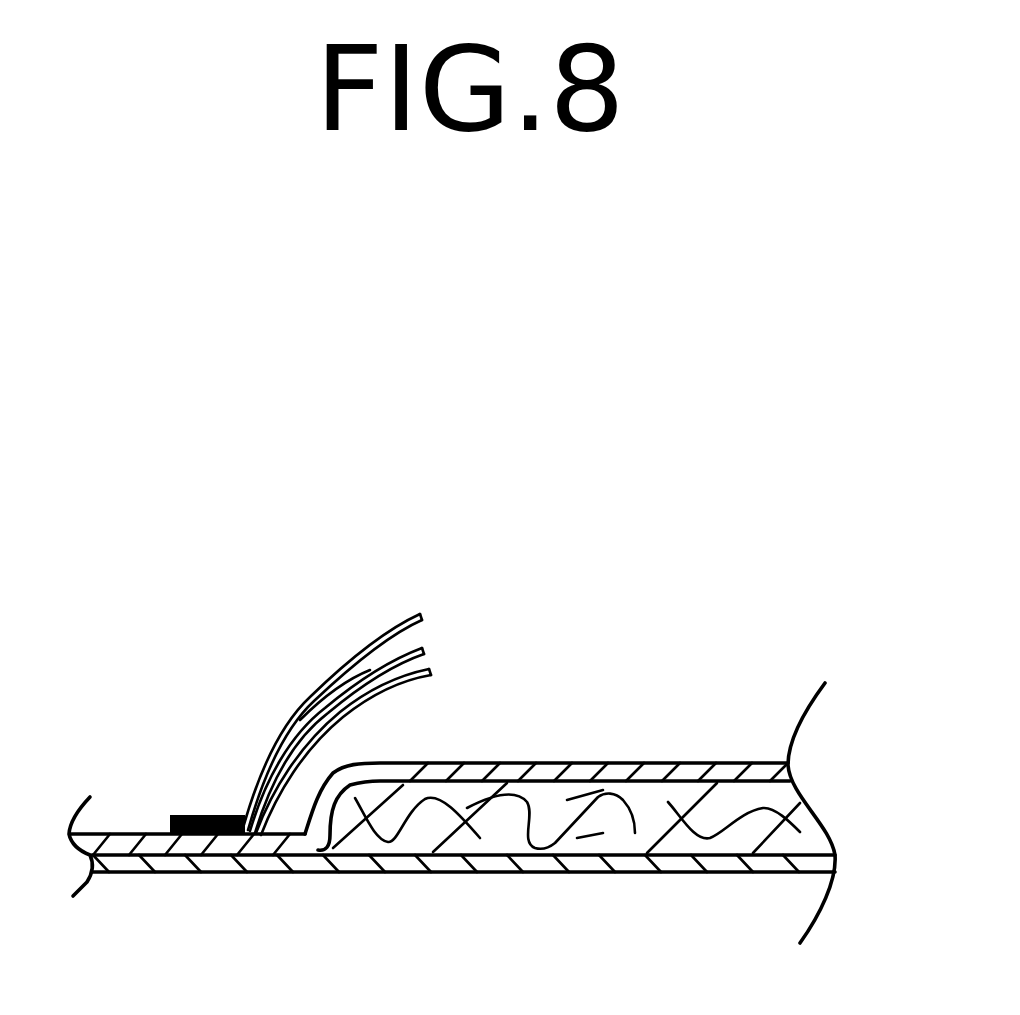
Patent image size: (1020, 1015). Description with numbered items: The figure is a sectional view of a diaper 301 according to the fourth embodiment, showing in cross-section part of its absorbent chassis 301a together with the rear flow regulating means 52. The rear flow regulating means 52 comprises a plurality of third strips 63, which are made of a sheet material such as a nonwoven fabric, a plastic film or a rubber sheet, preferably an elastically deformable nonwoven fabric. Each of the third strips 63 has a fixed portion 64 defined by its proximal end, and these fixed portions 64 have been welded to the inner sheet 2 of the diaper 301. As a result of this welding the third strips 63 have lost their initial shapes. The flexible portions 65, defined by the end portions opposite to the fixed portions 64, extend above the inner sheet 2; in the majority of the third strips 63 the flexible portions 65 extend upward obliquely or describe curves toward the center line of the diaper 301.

The inner sheet 2 is at (127, 833).
The rear flow regulating means 52 is at (293, 596).
The third strips 63 is at (425, 652).
The fixed portions 64 is at (202, 817).
The flexible portions 65 is at (297, 718).
The diaper 301 is at (673, 539).
The absorbent chassis 301a is at (531, 907).